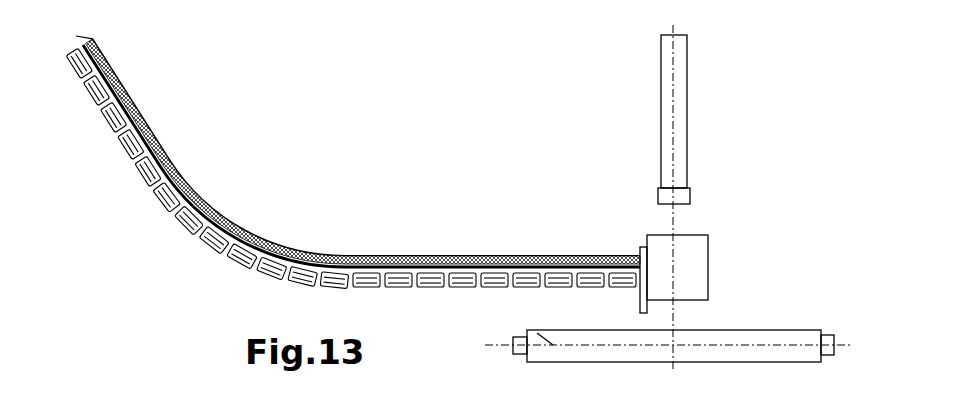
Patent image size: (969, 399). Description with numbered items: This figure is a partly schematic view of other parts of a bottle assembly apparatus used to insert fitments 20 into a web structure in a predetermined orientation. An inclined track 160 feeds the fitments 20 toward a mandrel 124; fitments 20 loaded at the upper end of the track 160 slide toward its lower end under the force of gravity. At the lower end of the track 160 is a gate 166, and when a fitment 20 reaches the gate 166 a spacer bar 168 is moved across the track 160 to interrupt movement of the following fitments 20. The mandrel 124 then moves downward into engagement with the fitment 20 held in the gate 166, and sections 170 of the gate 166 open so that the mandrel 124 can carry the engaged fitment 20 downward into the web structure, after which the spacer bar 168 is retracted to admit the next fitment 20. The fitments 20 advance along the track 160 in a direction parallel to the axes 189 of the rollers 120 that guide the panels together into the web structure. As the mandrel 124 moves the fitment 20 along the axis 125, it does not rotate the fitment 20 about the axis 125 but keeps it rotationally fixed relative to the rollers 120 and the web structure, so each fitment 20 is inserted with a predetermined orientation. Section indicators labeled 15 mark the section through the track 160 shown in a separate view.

The section line indicator 15 is at (140, 85).
The fitment 20 is at (336, 260).
The track 160 is at (252, 243).
The spacer bar 168 is at (640, 247).
The gate 166 is at (661, 239).
The sections of the gate 170 is at (697, 259).
The roller 120 is at (772, 328).
The axis of the roller 189 is at (535, 332).
The mandrel 124 is at (661, 105).
The axis 125 is at (673, 25).